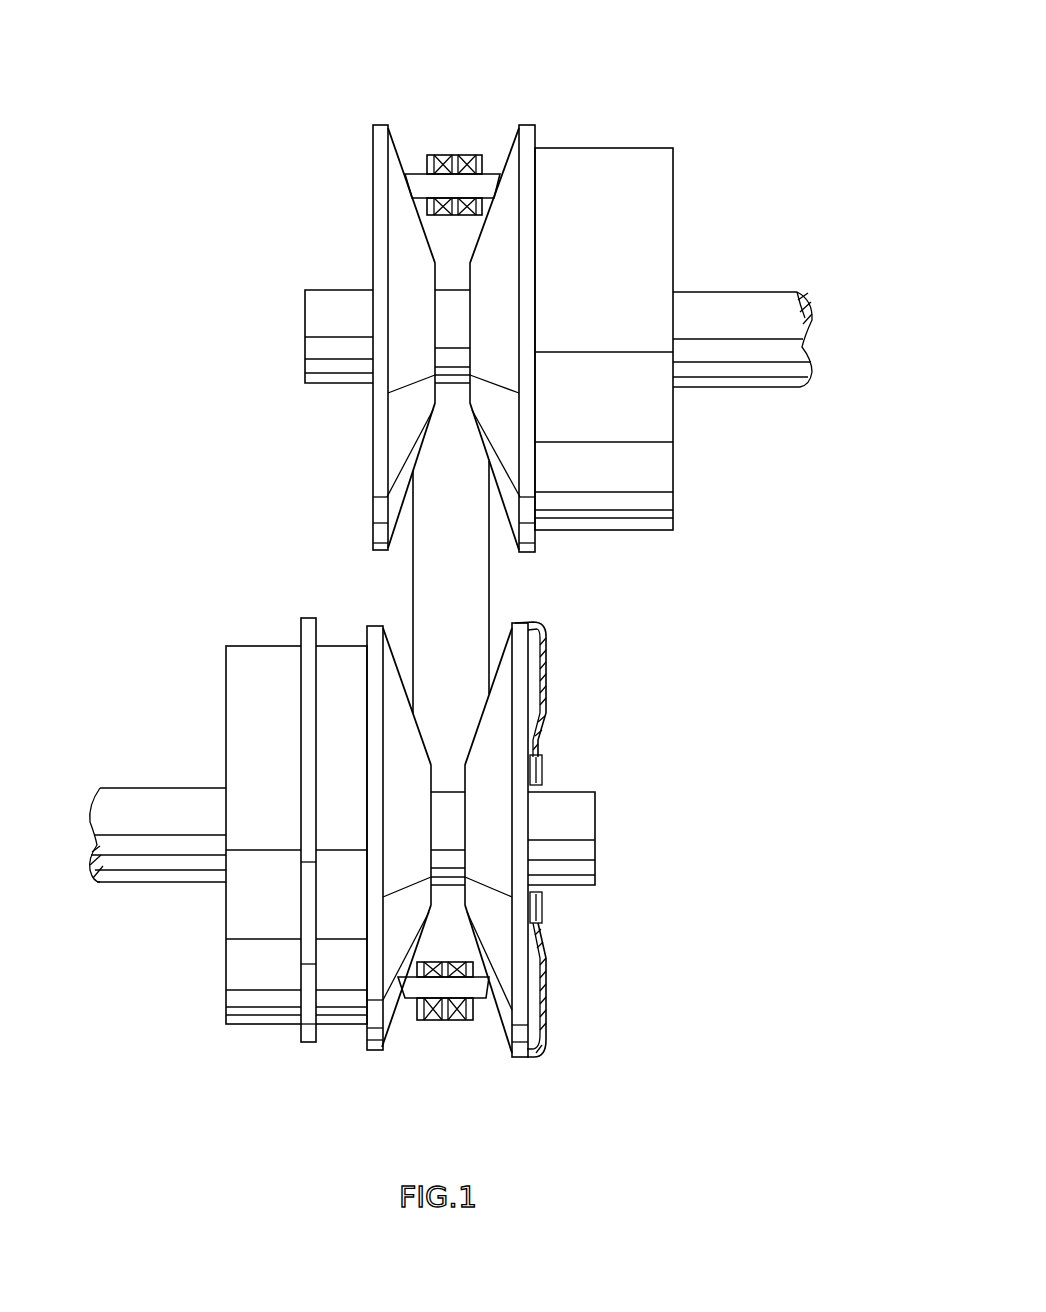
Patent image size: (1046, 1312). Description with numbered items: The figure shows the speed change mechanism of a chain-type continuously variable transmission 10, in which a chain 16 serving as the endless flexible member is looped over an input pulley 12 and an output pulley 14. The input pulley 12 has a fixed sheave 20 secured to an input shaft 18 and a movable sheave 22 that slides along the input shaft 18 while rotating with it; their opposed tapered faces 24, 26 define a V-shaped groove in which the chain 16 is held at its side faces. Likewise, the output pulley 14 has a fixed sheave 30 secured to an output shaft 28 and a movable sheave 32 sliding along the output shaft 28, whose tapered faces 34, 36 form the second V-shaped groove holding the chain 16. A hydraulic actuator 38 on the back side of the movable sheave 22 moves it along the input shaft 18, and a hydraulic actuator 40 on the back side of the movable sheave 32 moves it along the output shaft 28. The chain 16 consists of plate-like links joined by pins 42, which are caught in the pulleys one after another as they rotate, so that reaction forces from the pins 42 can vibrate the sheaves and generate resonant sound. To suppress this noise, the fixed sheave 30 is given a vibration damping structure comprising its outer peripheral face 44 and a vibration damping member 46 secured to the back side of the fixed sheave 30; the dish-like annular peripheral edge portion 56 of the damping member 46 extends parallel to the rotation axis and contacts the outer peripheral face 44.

The continuously variable transmission 10 is at (198, 296).
The input pulley 12 is at (340, 135).
The output pulley 14 is at (572, 727).
The chain 16 is at (455, 598).
The input shaft 18 is at (330, 300).
The fixed sheave 20 is at (378, 210).
The movable sheave 22 is at (528, 135).
The tapered face 24 is at (398, 172).
The tapered face 26 is at (503, 163).
The output shaft 28 is at (588, 818).
The fixed sheave 30 is at (520, 967).
The movable sheave 32 is at (372, 968).
The tapered face 34 is at (483, 1020).
The tapered face 36 is at (390, 997).
The hydraulic actuator 38 is at (618, 172).
The hydraulic actuator 40 is at (255, 1005).
The pins 42 is at (455, 190).
The outer peripheral face 44 is at (523, 645).
The vibration damping member 46 is at (550, 688).
The peripheral edge portion 56 is at (540, 1062).